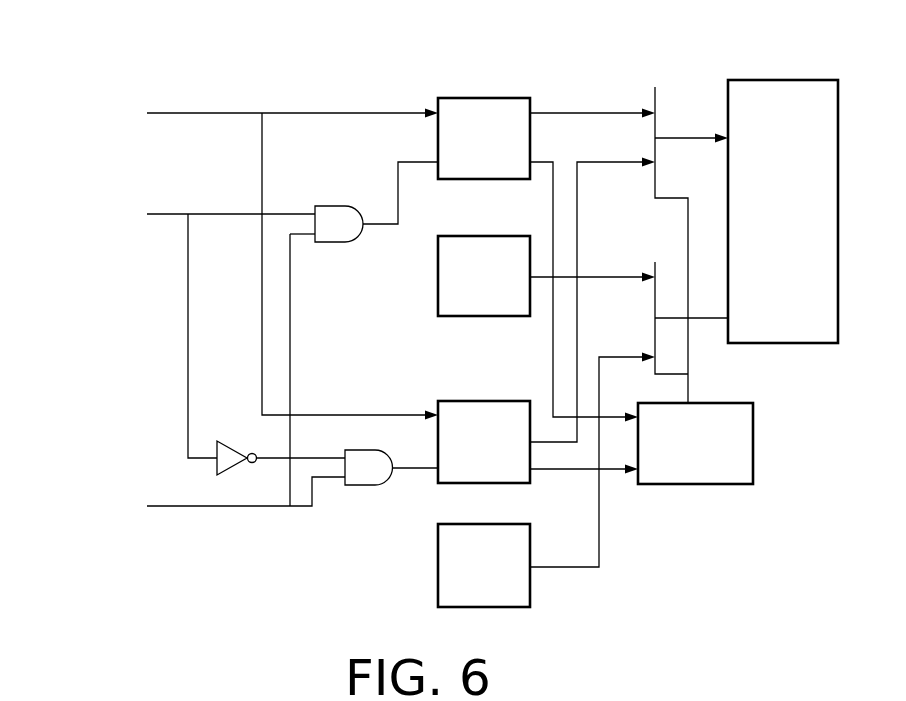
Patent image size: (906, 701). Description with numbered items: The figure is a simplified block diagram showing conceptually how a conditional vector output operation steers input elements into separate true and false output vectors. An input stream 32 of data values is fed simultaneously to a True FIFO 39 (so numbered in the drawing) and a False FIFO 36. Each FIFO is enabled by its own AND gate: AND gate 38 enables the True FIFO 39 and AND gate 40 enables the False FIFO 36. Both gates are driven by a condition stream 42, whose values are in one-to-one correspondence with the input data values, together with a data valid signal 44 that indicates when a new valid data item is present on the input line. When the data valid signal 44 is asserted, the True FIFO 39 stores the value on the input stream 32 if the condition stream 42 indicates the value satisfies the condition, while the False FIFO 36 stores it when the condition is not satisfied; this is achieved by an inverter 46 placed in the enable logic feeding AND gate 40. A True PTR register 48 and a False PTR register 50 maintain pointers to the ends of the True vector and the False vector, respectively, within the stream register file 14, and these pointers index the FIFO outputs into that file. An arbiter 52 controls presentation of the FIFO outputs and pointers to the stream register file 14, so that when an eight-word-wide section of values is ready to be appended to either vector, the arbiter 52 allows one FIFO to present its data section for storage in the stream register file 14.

The stream register file 14 is at (801, 80).
The input stream 32 is at (86, 80).
The False FIFO 36 is at (448, 400).
The AND gate 38 is at (345, 206).
The true FIFO 39 is at (438, 136).
The AND gate 40 is at (376, 486).
The condition stream 42 is at (61, 265).
The data valid signal 44 is at (100, 545).
The inverter 46 is at (226, 440).
The True PTR register 48 is at (438, 272).
The False PTR register 50 is at (438, 565).
The arbiter 52 is at (755, 448).